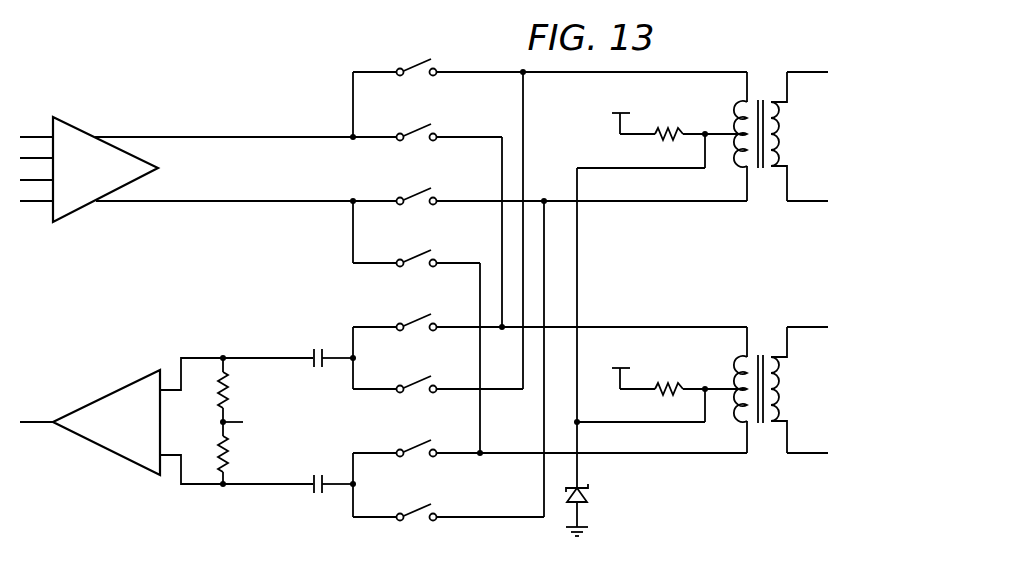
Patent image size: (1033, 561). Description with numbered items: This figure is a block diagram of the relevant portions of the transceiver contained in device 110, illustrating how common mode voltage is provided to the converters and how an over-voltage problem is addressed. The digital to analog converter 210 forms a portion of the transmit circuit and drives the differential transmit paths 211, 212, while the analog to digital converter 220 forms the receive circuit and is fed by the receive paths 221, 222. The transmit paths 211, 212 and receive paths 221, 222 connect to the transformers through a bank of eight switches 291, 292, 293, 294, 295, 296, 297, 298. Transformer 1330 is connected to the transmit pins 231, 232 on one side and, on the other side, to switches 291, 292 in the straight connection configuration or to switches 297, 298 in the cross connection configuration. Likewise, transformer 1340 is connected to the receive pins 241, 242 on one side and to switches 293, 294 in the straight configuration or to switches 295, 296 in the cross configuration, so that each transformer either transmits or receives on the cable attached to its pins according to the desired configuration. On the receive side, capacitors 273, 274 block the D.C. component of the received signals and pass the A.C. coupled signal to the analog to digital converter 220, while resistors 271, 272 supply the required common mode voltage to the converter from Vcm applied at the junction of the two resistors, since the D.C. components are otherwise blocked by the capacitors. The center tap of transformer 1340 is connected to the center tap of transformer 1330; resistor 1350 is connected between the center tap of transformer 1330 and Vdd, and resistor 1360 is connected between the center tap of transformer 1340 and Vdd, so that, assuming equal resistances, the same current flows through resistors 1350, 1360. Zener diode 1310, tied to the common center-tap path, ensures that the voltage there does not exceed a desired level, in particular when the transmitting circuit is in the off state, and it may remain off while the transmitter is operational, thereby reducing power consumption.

The device 110 is at (262, 47).
The digital to analog converter (DAC) 210 is at (68, 121).
The transmit path 211 is at (201, 136).
The transmit path 212 is at (201, 202).
The analog to digital converter (ADC) 220 is at (108, 452).
The receive path 221 is at (203, 357).
The receive path 222 is at (203, 485).
The transmit pin 231 is at (806, 71).
The transmit pin 232 is at (806, 202).
The receive pin 241 is at (806, 326).
The receive pin 242 is at (806, 454).
The resistor 271 is at (231, 393).
The resistor 272 is at (232, 459).
The capacitor 273 is at (315, 345).
The capacitor 274 is at (315, 497).
The switch 291 is at (416, 64).
The switch 292 is at (416, 193).
The switch 293 is at (416, 319).
The switch 294 is at (416, 445).
The switch 295 is at (416, 129).
The switch 296 is at (416, 255).
The switch 297 is at (416, 381).
The switch 298 is at (416, 509).
The zener diode 1310 is at (589, 490).
The transformer 1330 is at (780, 122).
The transformer 1340 is at (780, 402).
The resistor 1350 is at (669, 128).
The resistor 1360 is at (669, 383).